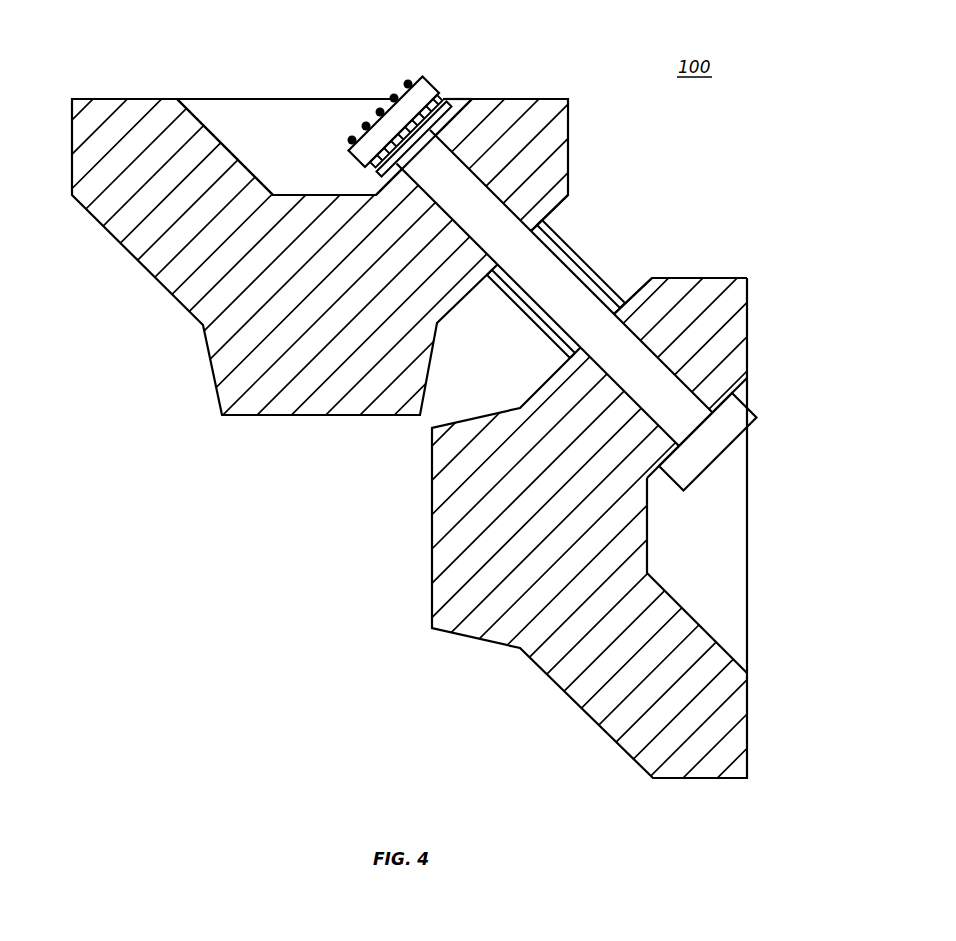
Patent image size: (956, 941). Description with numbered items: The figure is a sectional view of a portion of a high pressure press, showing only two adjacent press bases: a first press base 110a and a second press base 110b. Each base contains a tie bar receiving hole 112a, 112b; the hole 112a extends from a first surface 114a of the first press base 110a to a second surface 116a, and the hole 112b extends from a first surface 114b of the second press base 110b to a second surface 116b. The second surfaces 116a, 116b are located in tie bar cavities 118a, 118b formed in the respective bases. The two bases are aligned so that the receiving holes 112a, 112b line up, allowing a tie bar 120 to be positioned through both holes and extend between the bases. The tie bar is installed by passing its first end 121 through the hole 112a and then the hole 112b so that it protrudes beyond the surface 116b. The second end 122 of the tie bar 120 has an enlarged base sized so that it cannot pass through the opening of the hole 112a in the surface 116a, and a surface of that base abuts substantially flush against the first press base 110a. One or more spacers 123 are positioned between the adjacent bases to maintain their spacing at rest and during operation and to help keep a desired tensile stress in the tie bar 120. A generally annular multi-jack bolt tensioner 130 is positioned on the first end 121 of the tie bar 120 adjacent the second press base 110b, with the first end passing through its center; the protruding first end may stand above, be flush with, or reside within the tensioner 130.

The first press base 110a is at (693, 715).
The second press base 110b is at (245, 338).
The tie bar receiving hole 112a is at (679, 338).
The tie bar receiving hole 112b is at (548, 168).
The first surface 114a is at (623, 298).
The first surface 114b is at (548, 215).
The second surface 116a is at (653, 478).
The second surface 116b is at (297, 99).
The tie bar cavity 118a is at (717, 547).
The tie bar cavity 118b is at (237, 125).
The tie bar 120 is at (548, 292).
The first end 121 is at (376, 87).
The second end 122 is at (718, 440).
The spacer 123 is at (541, 326).
The multi-jack bolt tensioner 130 is at (467, 100).